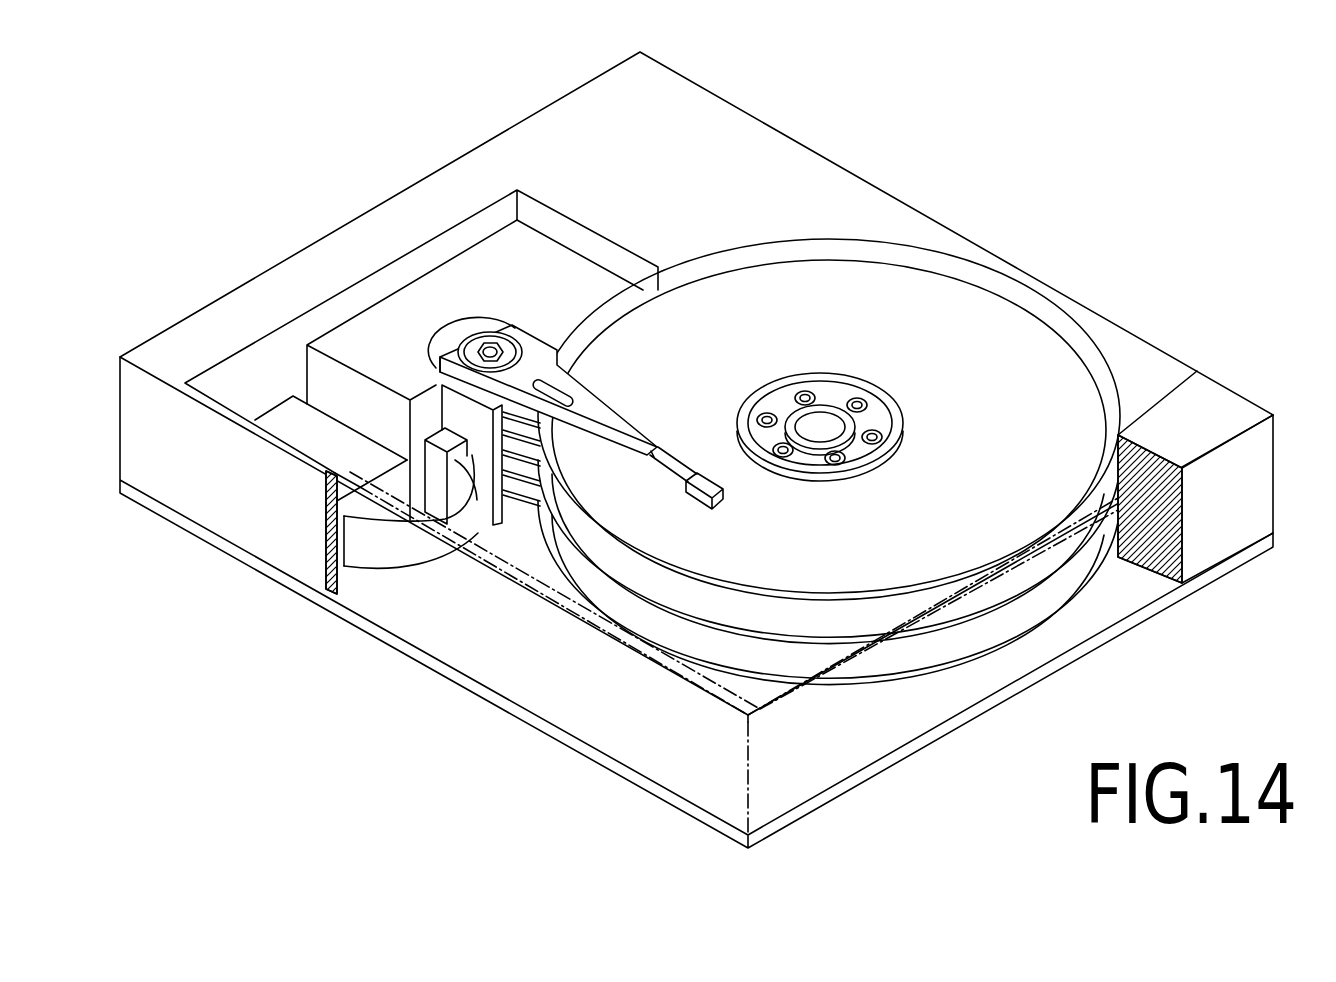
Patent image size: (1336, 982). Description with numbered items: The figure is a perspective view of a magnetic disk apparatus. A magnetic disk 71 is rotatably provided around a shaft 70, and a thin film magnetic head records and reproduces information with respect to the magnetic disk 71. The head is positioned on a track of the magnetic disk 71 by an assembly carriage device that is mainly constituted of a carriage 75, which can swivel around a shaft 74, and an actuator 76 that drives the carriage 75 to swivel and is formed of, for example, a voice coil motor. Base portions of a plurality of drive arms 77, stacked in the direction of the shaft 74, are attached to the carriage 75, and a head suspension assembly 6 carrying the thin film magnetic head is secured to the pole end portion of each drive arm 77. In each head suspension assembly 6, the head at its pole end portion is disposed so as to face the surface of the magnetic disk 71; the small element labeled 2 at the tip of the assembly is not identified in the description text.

The magnetic head slider 2 is at (724, 494).
The head suspension assembly 6 is at (680, 470).
The shaft 70 is at (825, 422).
The magnetic disk 71 is at (997, 412).
The shaft 74 is at (505, 345).
The carriage 75 is at (458, 482).
The actuator 76 is at (383, 359).
The drive arm 77 is at (599, 416).